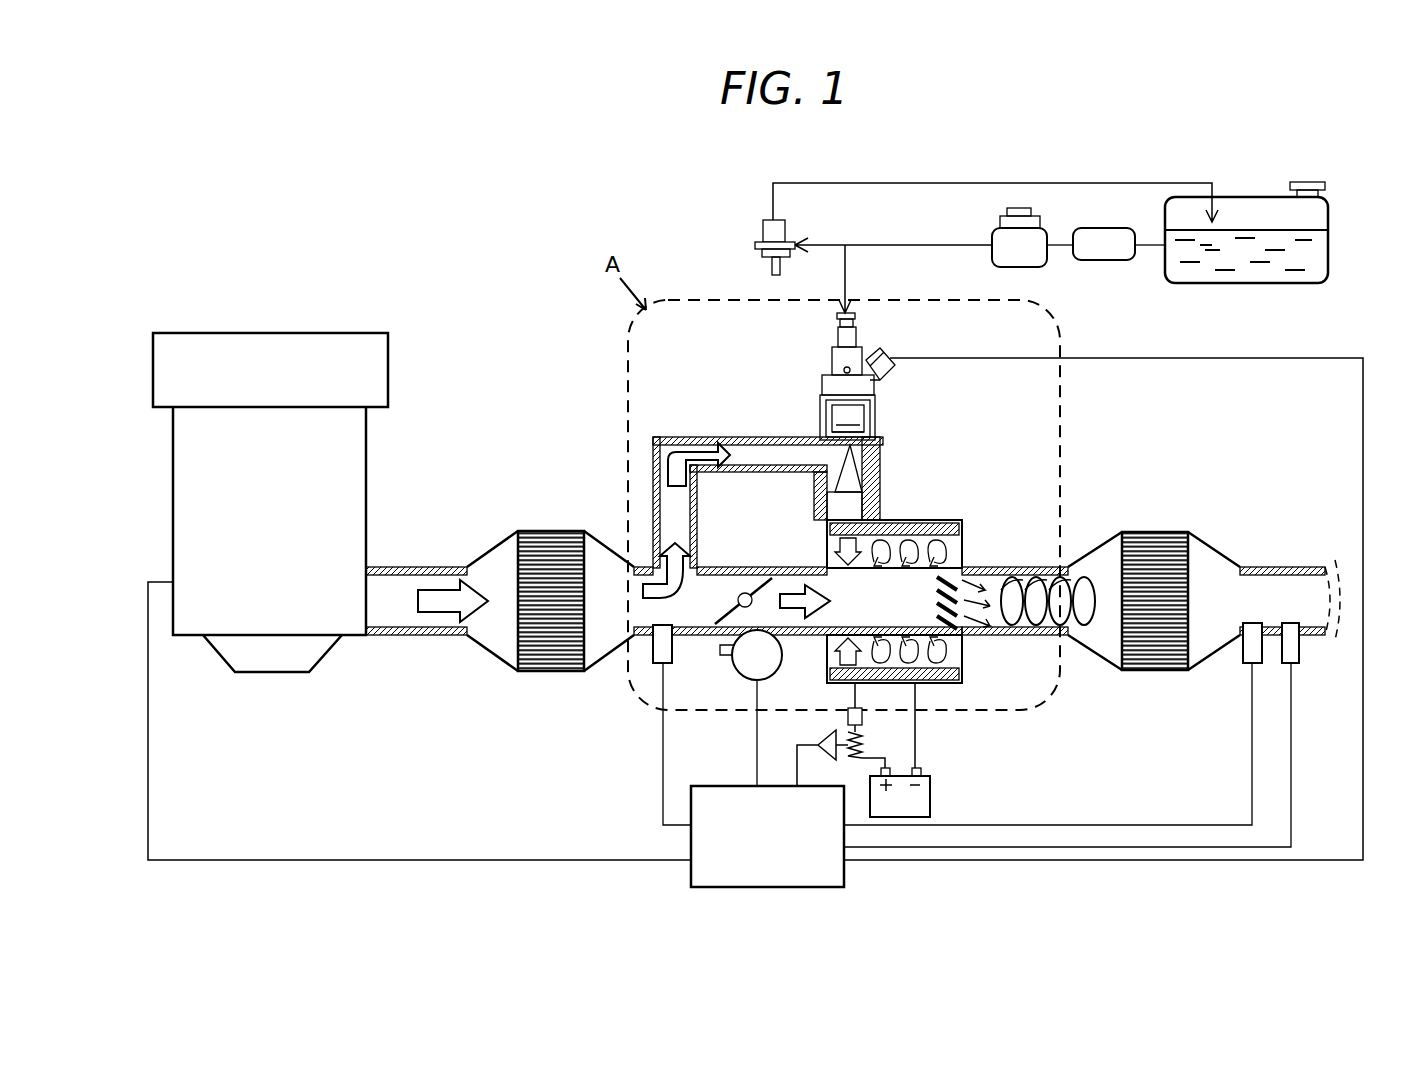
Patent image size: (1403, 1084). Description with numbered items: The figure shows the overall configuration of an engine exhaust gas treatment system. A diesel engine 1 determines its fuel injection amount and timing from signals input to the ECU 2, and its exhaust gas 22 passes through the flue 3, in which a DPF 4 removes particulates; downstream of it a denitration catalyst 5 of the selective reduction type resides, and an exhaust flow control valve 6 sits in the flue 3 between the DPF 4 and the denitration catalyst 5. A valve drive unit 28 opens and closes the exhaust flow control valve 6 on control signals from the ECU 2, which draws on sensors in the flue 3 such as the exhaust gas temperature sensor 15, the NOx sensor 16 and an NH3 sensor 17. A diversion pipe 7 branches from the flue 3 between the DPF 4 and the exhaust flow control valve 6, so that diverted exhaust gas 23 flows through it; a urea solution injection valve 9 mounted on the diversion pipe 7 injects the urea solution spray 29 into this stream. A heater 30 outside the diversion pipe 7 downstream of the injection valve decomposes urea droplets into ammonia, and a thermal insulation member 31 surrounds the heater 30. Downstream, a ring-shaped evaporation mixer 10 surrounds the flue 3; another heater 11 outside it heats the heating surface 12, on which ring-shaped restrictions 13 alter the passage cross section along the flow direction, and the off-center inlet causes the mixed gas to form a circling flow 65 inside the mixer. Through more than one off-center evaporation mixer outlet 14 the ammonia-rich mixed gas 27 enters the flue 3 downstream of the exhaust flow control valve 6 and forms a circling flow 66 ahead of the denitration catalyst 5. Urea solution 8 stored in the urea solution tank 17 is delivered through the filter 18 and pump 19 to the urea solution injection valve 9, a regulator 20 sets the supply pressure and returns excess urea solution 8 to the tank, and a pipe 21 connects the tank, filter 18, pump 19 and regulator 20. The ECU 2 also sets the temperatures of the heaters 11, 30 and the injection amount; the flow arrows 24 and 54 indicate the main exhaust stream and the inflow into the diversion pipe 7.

The diesel engine 1 is at (272, 360).
The ECU 2 is at (727, 866).
The flue 3 is at (386, 620).
The DPF 4 is at (548, 670).
The denitration catalyst 5 is at (1150, 670).
The exhaust flow control valve 6 is at (755, 575).
The diversion pipe 7 is at (738, 437).
The urea solution 8 is at (1308, 262).
The urea solution injection valve 9 is at (890, 357).
The evaporation mixer 10 is at (925, 564).
The heater 11 is at (950, 525).
The heating surface 12 is at (962, 530).
The restriction 13 is at (965, 683).
The evaporation mixer outlet 14 is at (960, 630).
The exhaust gas temperature sensor 15 is at (655, 663).
The NOx sensor 16 is at (1250, 663).
The urea solution tank 17 is at (1293, 663).
The filter 18 is at (1113, 233).
The pump 19 is at (1035, 230).
The regulator 20 is at (768, 225).
The pipe 21 is at (875, 183).
The exhaust gas 22 is at (440, 620).
The exhaust gas 23 is at (694, 445).
The main exhaust flow 24 is at (797, 623).
The mixed gas 27 is at (983, 565).
The valve drive unit 28 is at (737, 680).
The urea solution spray 29 is at (878, 440).
The heater 30 is at (880, 490).
The thermal insulation member 31 is at (880, 465).
The exhaust inlet flow to bypass 54 is at (648, 558).
The circling flow 65 is at (923, 685).
The circling flow 66 is at (1085, 575).